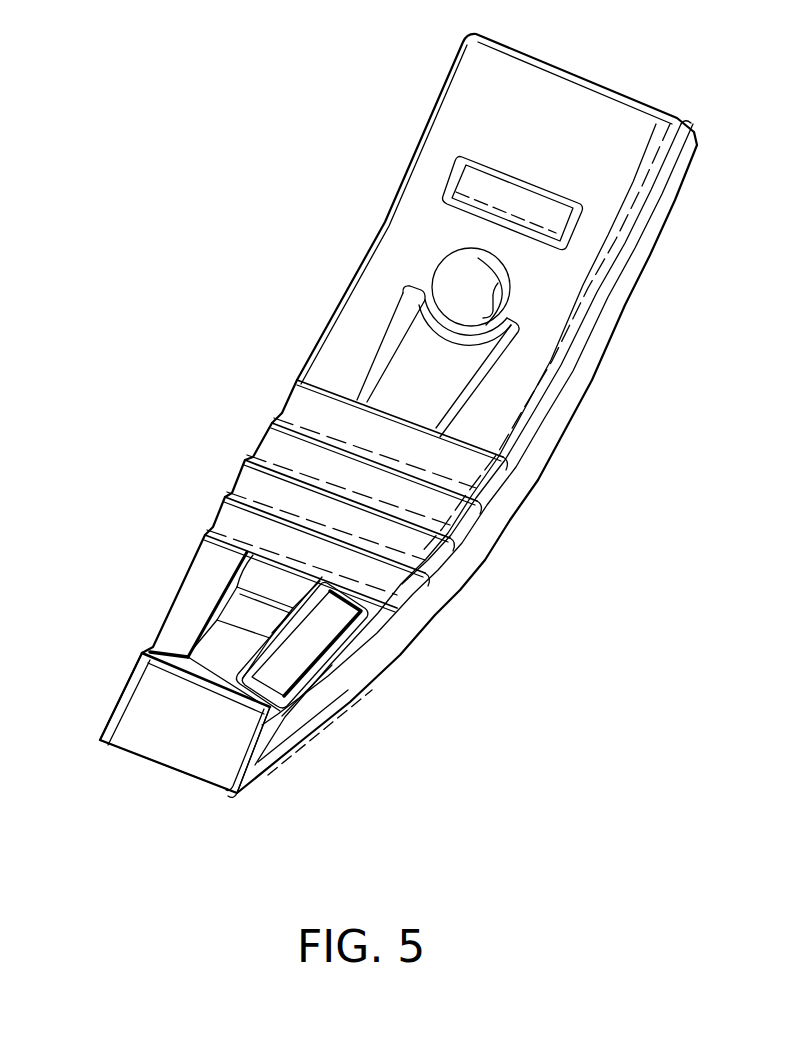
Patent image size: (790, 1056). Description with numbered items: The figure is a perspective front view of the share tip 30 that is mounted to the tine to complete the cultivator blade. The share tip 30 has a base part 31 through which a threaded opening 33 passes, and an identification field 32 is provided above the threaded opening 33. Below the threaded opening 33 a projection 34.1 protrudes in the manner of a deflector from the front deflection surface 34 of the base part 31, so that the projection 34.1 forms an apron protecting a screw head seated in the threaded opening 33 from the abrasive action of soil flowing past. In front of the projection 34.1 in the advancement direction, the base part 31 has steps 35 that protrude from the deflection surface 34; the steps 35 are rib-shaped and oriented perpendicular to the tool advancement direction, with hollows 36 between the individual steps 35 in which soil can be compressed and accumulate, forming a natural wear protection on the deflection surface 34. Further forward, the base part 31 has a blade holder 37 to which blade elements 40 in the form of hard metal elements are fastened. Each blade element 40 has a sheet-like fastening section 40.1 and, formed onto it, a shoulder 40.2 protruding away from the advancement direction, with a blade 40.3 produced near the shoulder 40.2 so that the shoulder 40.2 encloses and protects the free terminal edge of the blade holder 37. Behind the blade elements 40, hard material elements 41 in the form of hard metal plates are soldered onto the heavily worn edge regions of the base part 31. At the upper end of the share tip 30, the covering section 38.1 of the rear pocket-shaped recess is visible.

The share tip 30 is at (220, 397).
The base part 31 is at (410, 237).
The identification field 32 is at (465, 187).
The threaded opening 33 is at (496, 270).
The front deflection surface 34 is at (507, 405).
The projection 34.1 is at (460, 353).
The steps 35 is at (480, 492).
The hollows 36 is at (420, 557).
The blade holder 37 is at (280, 757).
The covering section 38.1 is at (583, 110).
The blade elements 40 is at (243, 725).
The sheet-like fastening section 40.1 is at (137, 698).
The shoulder 40.2 is at (243, 793).
The blade 40.3 is at (170, 750).
The hard material elements 41 is at (330, 630).